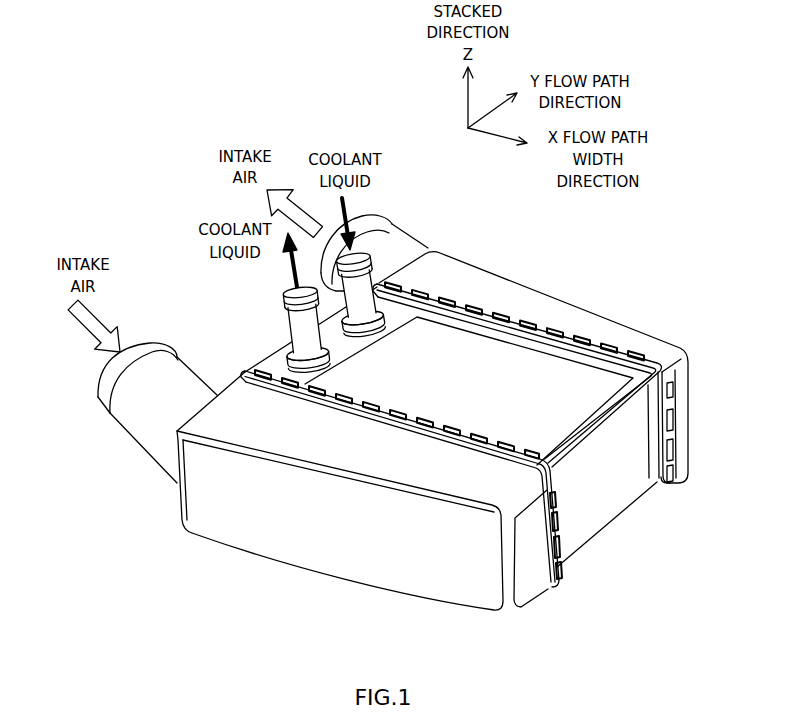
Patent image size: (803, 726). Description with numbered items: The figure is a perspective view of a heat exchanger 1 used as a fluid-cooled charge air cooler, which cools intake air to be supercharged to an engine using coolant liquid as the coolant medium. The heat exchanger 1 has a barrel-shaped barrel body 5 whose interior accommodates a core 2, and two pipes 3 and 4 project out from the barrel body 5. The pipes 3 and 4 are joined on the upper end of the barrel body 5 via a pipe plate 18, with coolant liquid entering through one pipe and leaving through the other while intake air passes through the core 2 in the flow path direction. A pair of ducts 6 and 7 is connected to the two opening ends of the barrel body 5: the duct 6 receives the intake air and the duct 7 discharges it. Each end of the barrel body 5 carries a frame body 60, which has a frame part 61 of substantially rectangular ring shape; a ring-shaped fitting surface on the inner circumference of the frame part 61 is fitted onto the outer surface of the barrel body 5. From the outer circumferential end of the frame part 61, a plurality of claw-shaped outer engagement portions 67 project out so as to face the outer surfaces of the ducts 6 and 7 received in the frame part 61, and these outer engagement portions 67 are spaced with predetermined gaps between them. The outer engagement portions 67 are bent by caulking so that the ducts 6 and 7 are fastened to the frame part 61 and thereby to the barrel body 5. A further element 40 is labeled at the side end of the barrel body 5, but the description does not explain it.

The heat exchanger 1 is at (444, 432).
The core 2 is at (582, 507).
The pipe 3 is at (374, 270).
The pipe 4 is at (288, 327).
The barrel body 5 is at (617, 509).
The duct 6 is at (355, 552).
The duct 7 is at (507, 265).
The pipe plate 18 is at (283, 365).
The end plate 40 is at (626, 476).
The frame body 60 is at (530, 318).
The frame part 61 is at (641, 353).
The outer engagement portion 67 is at (633, 343).